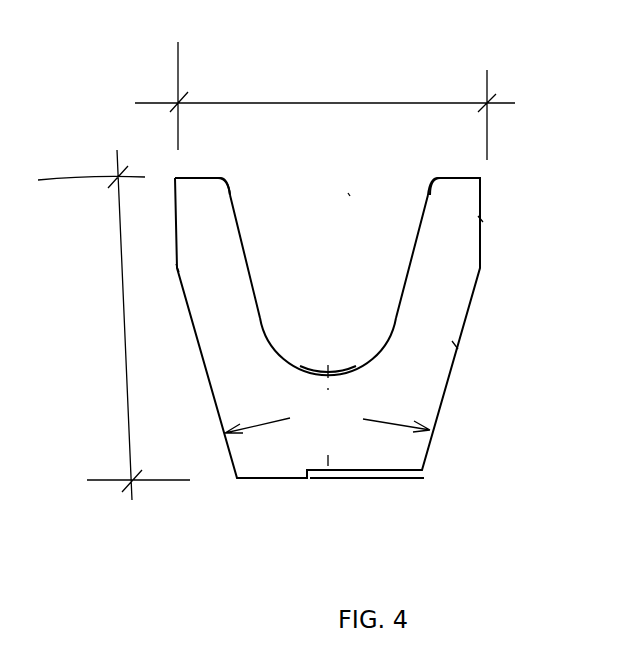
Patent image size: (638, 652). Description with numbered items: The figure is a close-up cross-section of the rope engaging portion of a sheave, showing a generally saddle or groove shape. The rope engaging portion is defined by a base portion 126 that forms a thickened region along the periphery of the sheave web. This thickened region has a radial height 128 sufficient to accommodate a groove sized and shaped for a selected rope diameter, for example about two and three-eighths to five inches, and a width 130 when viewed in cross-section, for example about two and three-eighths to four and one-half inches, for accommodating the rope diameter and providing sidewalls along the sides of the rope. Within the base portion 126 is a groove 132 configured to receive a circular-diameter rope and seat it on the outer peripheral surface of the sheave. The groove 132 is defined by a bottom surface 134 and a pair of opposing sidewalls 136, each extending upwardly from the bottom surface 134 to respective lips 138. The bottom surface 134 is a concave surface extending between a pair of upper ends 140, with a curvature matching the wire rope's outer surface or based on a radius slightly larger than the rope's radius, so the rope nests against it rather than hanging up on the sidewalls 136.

The base portion 126 is at (445, 378).
The radial height 128 is at (114, 325).
The width 130 is at (325, 101).
The groove 132 is at (348, 193).
The bottom surface 134 is at (370, 366).
The sidewalls 136 is at (248, 263).
The lips 138 is at (435, 178).
The upper ends 140 is at (393, 328).